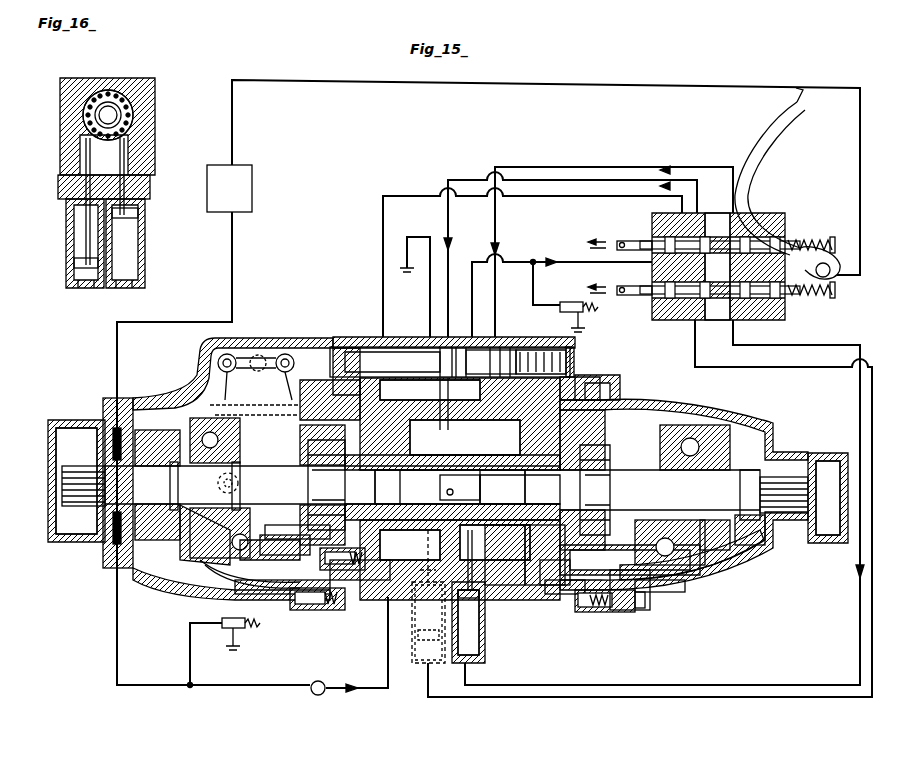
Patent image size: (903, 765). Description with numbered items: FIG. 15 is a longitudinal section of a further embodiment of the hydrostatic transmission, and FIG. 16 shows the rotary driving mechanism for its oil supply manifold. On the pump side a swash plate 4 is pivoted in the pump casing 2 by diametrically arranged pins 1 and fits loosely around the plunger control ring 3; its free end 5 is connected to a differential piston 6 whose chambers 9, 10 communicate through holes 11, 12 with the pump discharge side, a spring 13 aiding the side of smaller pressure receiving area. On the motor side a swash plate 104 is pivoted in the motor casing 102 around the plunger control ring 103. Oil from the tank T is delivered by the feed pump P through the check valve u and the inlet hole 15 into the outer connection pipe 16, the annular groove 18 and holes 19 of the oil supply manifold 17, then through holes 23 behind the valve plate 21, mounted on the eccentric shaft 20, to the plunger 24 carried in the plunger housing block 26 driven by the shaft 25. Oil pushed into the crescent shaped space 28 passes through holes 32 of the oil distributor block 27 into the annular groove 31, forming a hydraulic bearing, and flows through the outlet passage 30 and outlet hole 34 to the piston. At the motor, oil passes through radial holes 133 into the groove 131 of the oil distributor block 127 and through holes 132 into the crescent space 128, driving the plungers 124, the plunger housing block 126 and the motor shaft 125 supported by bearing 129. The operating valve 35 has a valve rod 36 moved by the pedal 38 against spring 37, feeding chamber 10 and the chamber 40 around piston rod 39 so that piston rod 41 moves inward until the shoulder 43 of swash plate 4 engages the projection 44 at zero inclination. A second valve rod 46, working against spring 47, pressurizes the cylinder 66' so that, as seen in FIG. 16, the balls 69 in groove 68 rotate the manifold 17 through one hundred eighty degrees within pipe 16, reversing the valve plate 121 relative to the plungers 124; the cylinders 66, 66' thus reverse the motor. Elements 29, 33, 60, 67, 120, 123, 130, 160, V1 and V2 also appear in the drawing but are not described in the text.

In FIG. 15, the pins 1 is at (224, 480).
In FIG. 15, the pump casing 2 is at (244, 574).
In FIG. 15, the plunger control ring 3 is at (220, 488).
In FIG. 15, the swash plate 4 is at (268, 574).
In FIG. 15, the free end 5 is at (258, 406).
In FIG. 15, the differential piston 6 is at (472, 348).
In FIG. 15, the chamber 9 is at (492, 346).
In FIG. 15, the chamber 10 is at (442, 342).
In FIG. 15, the hole 11 is at (510, 348).
In FIG. 15, the hole 12 is at (460, 340).
In FIG. 15, the spring 13 is at (570, 348).
In FIG. 15, the oil inlet hole 15 is at (418, 636).
In FIG. 16, the outer connection pipe 16 is at (152, 144).
In FIG. 15, the outer connection pipe 16 is at (484, 606).
In FIG. 16, the oil supply manifold 17 is at (110, 90).
In FIG. 15, the oil supply manifold 17 is at (424, 590).
In FIG. 15, the annular groove 18 is at (467, 487).
In FIG. 15, the holes 19 is at (461, 486).
In FIG. 15, the shaft 20 is at (322, 485).
In FIG. 15, the valve plate 21 is at (302, 340).
In FIG. 15, the holes 23 is at (316, 610).
In FIG. 15, the plunger 24 is at (290, 542).
In FIG. 15, the rotating shaft 25 is at (170, 562).
In FIG. 15, the plunger housing block 26 is at (280, 592).
In FIG. 15, the oil distributor block 27 is at (354, 610).
In FIG. 15, the crescent shaped space 28 is at (384, 578).
In FIG. 15, the housing flange 29 is at (150, 559).
In FIG. 15, the outlet side oil passage 30 is at (338, 362).
In FIG. 15, the annular groove 31 is at (452, 474).
In FIG. 15, the holes 32 is at (452, 552).
In FIG. 15, the sleeve 33 is at (450, 487).
In FIG. 15, the outlet hole 34 is at (444, 396).
In FIG. 15, the operating valve 35 is at (772, 216).
In FIG. 15, the valve rod 36 is at (632, 241).
In FIG. 15, the spring 37 is at (822, 238).
In FIG. 15, the pedal 38 is at (802, 116).
In FIG. 15, the piston rod 39 is at (422, 338).
In FIG. 15, the chamber 40 is at (362, 338).
In FIG. 15, the piston rod 41 is at (526, 350).
In FIG. 15, the shoulder 43 is at (202, 570).
In FIG. 15, the projection 44 is at (196, 530).
In FIG. 15, the valve rod 46 is at (626, 292).
In FIG. 15, the spring 47 is at (814, 300).
In FIG. 15, the end cap 60 is at (68, 542).
In FIG. 16, the oil pressure cylinder 66 is at (144, 243).
In FIG. 15, the oil pressure cylinder 66 is at (484, 622).
In FIG. 16, the oil pressure cylinder 66' is at (71, 243).
In FIG. 15, the oil pressure cylinder 66' is at (422, 640).
In FIG. 16, the wall 67 is at (146, 194).
In FIG. 16, the groove 68 is at (128, 95).
In FIG. 16, the group of balls 69 is at (144, 112).
In FIG. 15, the motor casing 102 is at (682, 404).
In FIG. 15, the plunger control ring 103 is at (682, 495).
In FIG. 15, the swash plate 104 is at (688, 580).
In FIG. 15, the gear 120 is at (585, 480).
In FIG. 15, the valve plate 121 is at (586, 382).
In FIG. 15, the bolt 123 is at (630, 608).
In FIG. 15, the plunger 124 is at (642, 586).
In FIG. 15, the oil motor shaft 125 is at (718, 560).
In FIG. 15, the plunger housing block 126 is at (586, 610).
In FIG. 15, the oil distributor block 127 is at (556, 592).
In FIG. 15, the crescent shaped space 128 is at (546, 588).
In FIG. 15, the bearing 129 is at (754, 552).
In FIG. 15, the plate 130 is at (580, 378).
In FIG. 15, the annular groove 131 is at (500, 576).
In FIG. 15, the radial holes 132 is at (532, 578).
In FIG. 15, the radial holes 133 is at (520, 489).
In FIG. 15, the end cap 160 is at (804, 532).
In FIG. 15, the feed pump P is at (108, 416).
In FIG. 15, the oil tank T is at (229, 188).
In FIG. 15, the valve V1 is at (569, 309).
In FIG. 15, the valve V2 is at (239, 634).
In FIG. 15, the check valve u is at (312, 679).